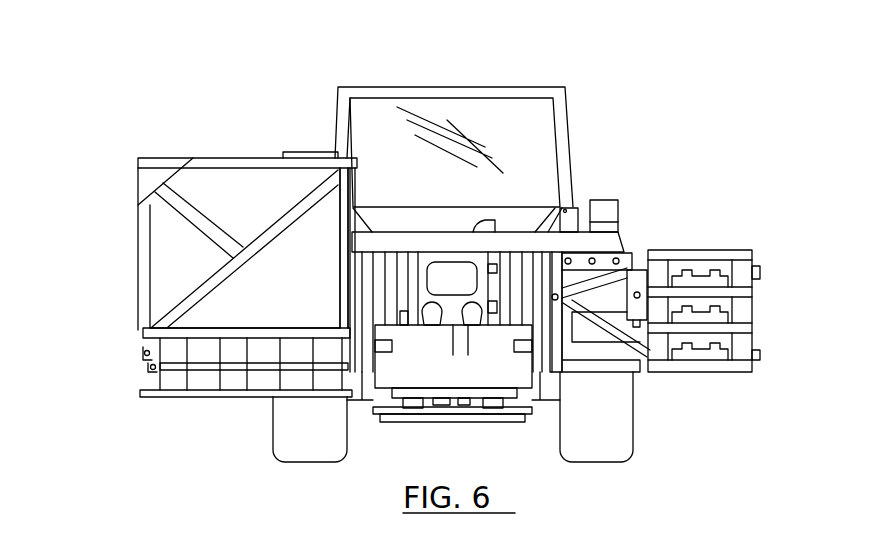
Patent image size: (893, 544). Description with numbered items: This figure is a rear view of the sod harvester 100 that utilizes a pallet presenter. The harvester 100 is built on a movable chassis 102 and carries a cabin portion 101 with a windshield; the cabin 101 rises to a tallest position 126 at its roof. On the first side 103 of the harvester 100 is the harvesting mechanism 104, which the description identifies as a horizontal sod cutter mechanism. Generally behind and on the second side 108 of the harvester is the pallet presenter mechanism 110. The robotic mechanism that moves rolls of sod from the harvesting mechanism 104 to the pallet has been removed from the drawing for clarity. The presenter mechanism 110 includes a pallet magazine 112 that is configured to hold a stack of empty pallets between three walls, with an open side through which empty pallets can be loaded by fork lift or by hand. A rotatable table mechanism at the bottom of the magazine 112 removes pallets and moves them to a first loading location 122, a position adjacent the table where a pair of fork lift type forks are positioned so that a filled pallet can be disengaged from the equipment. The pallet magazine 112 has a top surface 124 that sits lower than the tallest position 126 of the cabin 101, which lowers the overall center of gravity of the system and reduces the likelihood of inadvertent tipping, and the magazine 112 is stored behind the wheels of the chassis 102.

The harvester 100 is at (596, 70).
The cabin portion 101 is at (445, 91).
The movable chassis 102 is at (543, 400).
The first side 103 is at (576, 192).
The harvesting mechanism 104 is at (710, 368).
The second side 108 is at (336, 121).
The pallet presenter mechanism 110 is at (136, 265).
The pallet magazine 112 is at (137, 315).
The first loading location 122 is at (363, 393).
The top surface 124 is at (158, 157).
The tallest position 126 is at (388, 86).